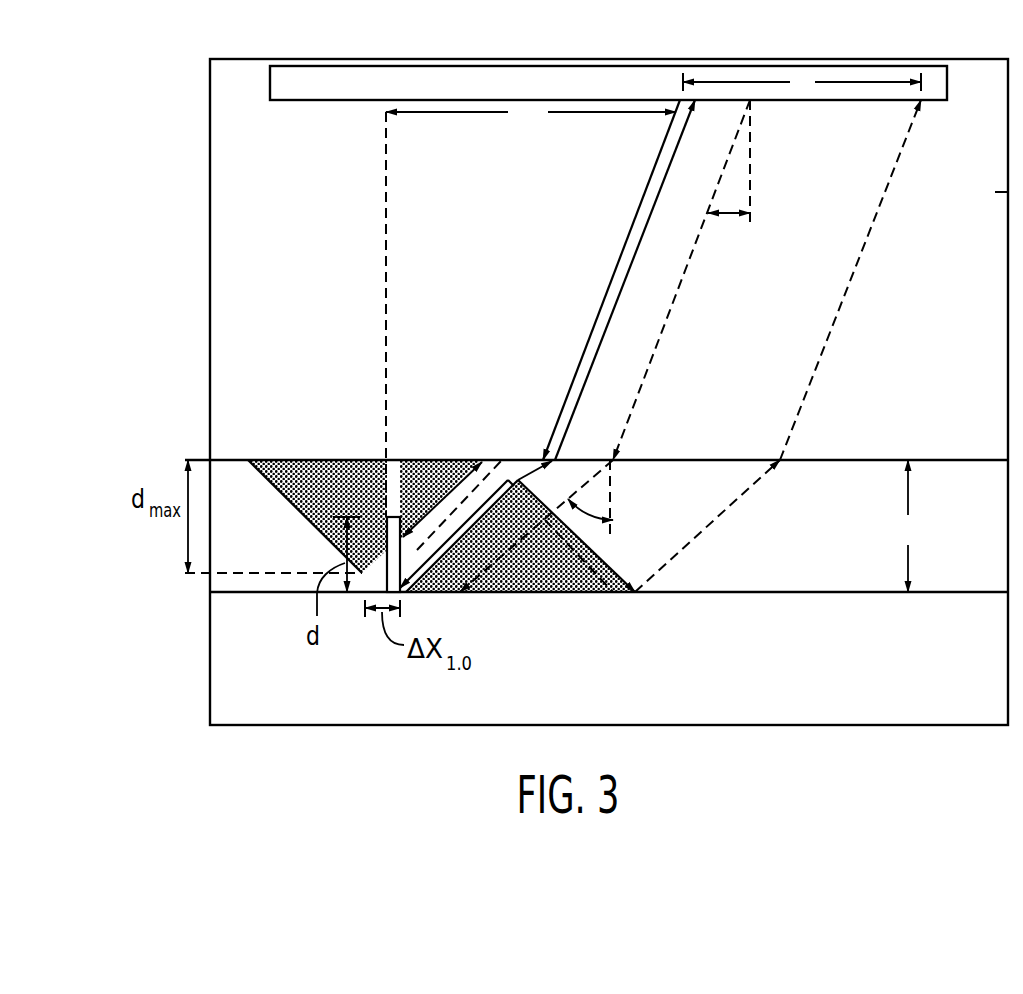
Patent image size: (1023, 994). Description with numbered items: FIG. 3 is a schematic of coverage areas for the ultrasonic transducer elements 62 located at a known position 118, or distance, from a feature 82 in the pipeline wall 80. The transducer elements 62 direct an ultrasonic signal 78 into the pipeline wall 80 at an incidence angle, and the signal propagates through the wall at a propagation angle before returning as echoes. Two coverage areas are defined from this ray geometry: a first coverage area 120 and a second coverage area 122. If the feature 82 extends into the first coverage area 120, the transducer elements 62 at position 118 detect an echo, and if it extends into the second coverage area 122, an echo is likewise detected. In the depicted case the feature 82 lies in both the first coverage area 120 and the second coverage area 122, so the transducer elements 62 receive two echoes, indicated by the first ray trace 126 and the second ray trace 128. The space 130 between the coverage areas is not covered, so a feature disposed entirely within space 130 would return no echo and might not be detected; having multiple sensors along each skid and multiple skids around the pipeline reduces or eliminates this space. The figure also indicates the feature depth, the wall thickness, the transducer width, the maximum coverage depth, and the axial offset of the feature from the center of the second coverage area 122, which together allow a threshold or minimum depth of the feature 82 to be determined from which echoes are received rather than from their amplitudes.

The ultrasonic transducer elements 62 is at (628, 93).
The known position 118 is at (531, 306).
The ultrasonic beam 78 is at (603, 305).
The feature 82 is at (395, 460).
The space 130 is at (283, 522).
The first ray trace 126 is at (571, 384).
The second ray trace 128 is at (637, 395).
The second coverage area 122 is at (380, 501).
The first coverage area 120 is at (560, 575).
The pipeline wall 80 is at (804, 541).